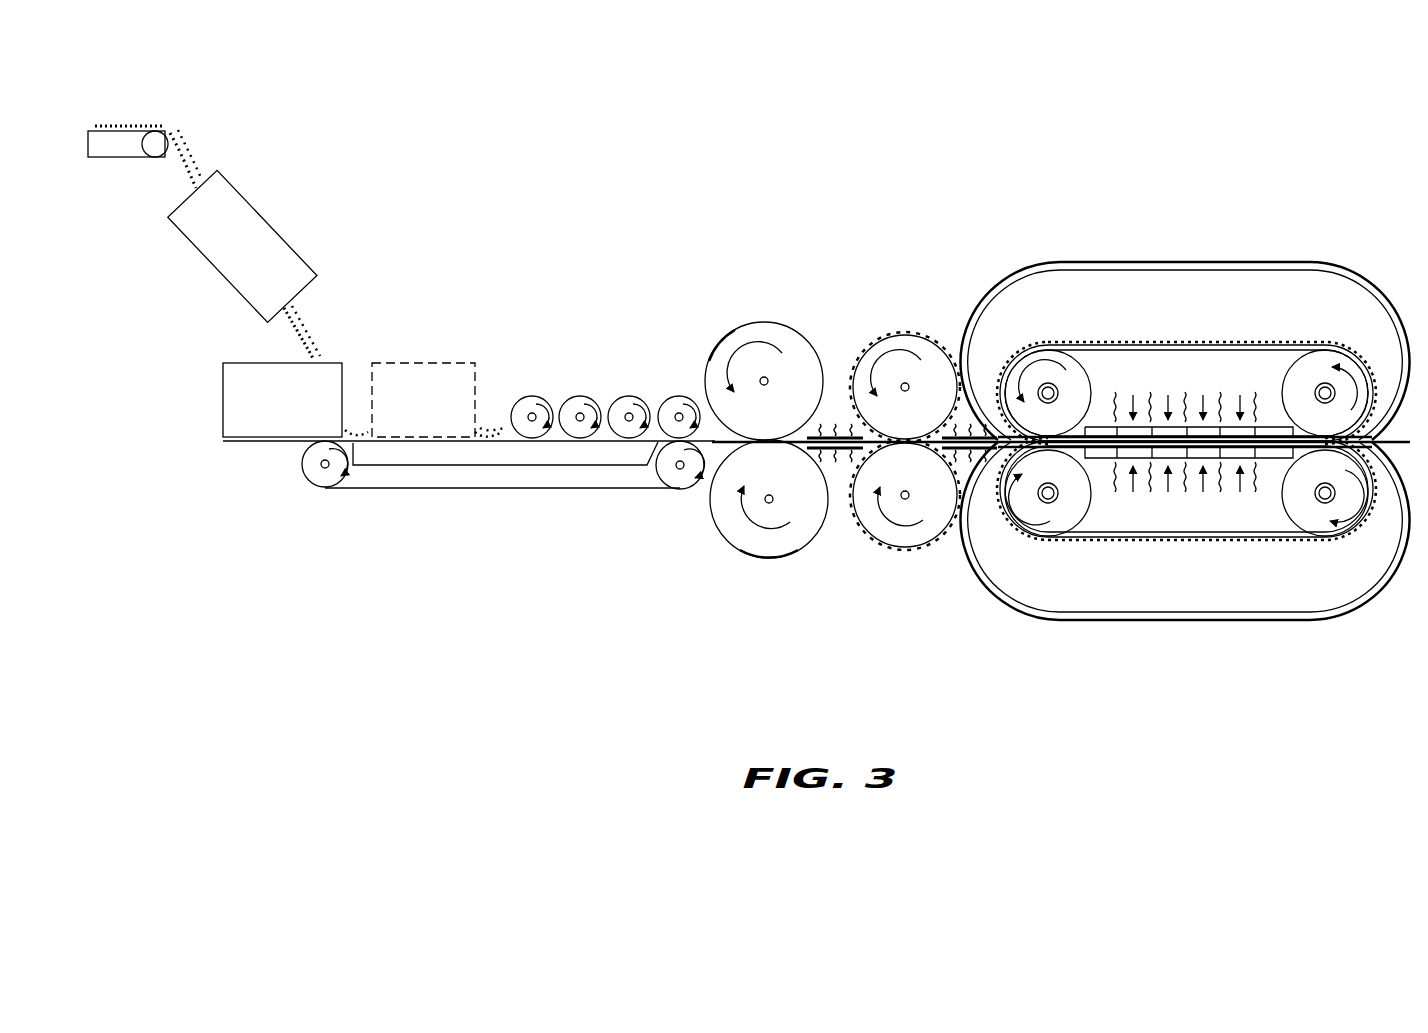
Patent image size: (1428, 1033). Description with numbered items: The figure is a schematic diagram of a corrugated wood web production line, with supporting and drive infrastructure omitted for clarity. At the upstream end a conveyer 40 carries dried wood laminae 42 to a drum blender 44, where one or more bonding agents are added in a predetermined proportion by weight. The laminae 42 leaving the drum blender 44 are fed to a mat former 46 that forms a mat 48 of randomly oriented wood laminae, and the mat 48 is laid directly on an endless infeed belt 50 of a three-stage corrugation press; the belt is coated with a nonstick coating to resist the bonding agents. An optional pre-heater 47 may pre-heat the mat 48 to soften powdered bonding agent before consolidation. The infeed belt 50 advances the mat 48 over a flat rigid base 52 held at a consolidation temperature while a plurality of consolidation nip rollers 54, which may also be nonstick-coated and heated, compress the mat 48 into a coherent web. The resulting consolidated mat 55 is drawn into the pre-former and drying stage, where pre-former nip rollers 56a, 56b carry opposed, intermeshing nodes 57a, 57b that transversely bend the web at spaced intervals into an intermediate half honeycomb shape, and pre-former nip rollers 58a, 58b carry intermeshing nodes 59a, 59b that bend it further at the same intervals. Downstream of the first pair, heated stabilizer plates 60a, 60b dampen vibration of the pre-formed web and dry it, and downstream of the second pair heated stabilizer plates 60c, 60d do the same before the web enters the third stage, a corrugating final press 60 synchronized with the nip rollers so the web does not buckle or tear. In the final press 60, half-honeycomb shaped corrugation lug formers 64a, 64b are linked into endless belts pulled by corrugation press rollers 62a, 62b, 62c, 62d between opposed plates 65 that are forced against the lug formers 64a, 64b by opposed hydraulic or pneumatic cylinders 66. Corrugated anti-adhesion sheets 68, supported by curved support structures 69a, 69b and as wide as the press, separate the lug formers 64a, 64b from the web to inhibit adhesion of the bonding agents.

The conveyer 40 is at (132, 158).
The dried wood laminae 42 is at (192, 153).
The drum blender 44 is at (252, 204).
The mat former 46 is at (333, 363).
The pre-heater 47 is at (404, 363).
The mat 48 is at (490, 416).
The endless infeed belt 50 is at (512, 491).
The flat rigid base 52 is at (624, 456).
The consolidation nip rollers 54 is at (534, 397).
The consolidated mat 55 is at (713, 444).
The pre-former nip roller 56a is at (766, 336).
The pre-former nip roller 56b is at (769, 546).
The intermeshing nodes 57a is at (738, 335).
The intermeshing nodes 57b is at (811, 549).
The pre-former nip roller 58a is at (908, 351).
The pre-former nip roller 58b is at (915, 540).
The intermeshing nodes 59a is at (877, 348).
The intermeshing nodes 59b is at (941, 539).
The corrugating final press 60 is at (1167, 173).
The heated stabilizer plate 60a is at (846, 450).
The heated stabilizer plate 60b is at (846, 450).
The heated stabilizer plate 60c is at (961, 449).
The heated stabilizer plate 60d is at (961, 449).
The corrugation press roller 62a is at (1060, 375).
The corrugation press roller 62b is at (1312, 375).
The corrugation press roller 62c is at (1060, 510).
The corrugation press roller 62d is at (1312, 510).
The corrugation lug formers 64a is at (1163, 342).
The corrugation lug formers 64b is at (1165, 545).
The opposed plates 65 is at (1247, 427).
The hydraulic or pneumatic cylinders 66 is at (1170, 406).
The corrugated anti-adhesion sheets 68 is at (1270, 262).
The curved support structure 69a is at (1258, 271).
The curved support structure 69b is at (1260, 611).